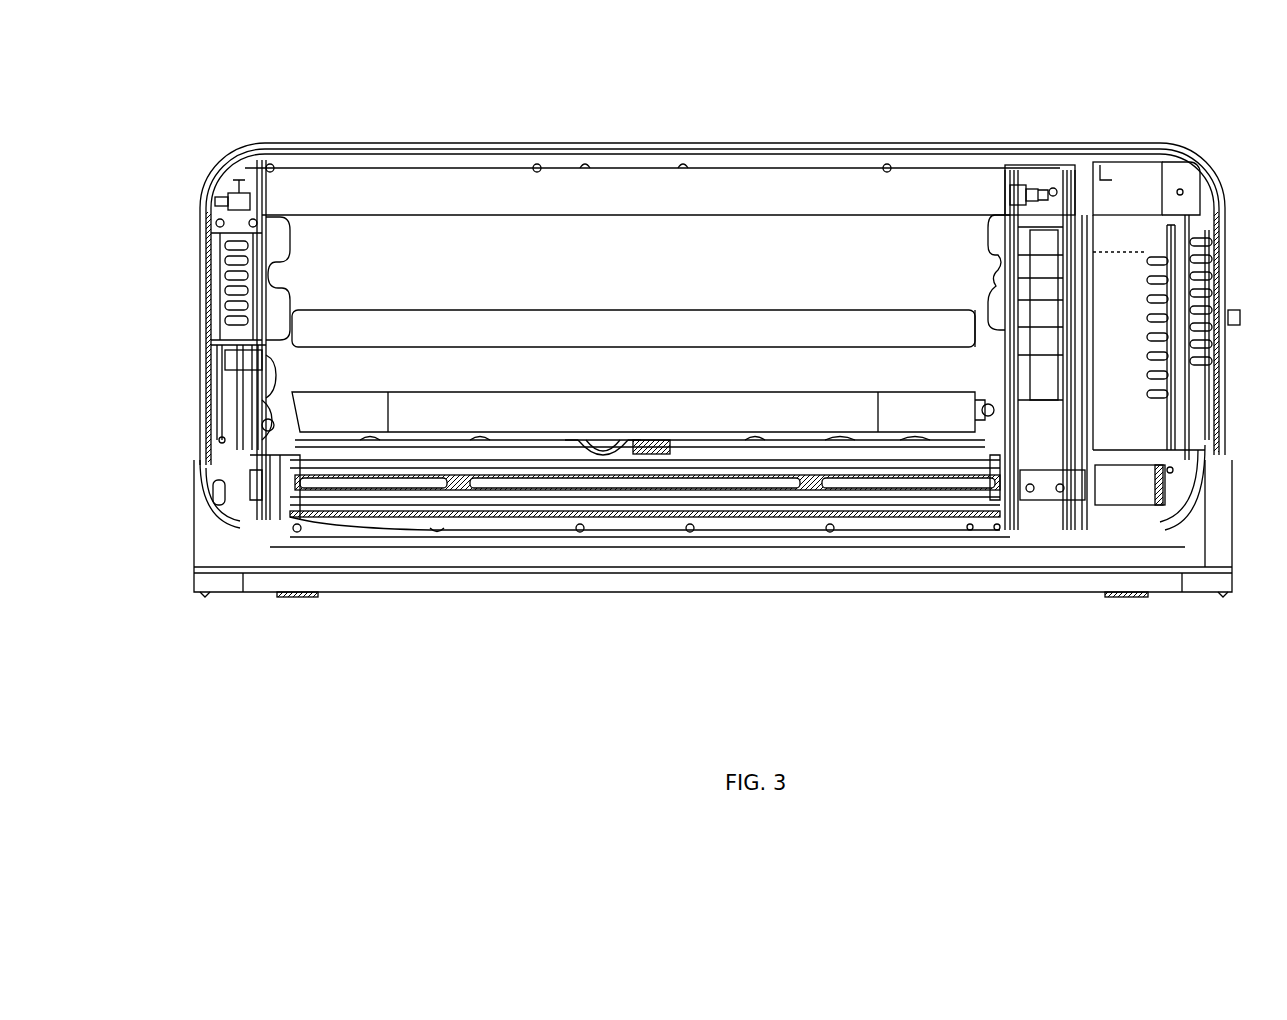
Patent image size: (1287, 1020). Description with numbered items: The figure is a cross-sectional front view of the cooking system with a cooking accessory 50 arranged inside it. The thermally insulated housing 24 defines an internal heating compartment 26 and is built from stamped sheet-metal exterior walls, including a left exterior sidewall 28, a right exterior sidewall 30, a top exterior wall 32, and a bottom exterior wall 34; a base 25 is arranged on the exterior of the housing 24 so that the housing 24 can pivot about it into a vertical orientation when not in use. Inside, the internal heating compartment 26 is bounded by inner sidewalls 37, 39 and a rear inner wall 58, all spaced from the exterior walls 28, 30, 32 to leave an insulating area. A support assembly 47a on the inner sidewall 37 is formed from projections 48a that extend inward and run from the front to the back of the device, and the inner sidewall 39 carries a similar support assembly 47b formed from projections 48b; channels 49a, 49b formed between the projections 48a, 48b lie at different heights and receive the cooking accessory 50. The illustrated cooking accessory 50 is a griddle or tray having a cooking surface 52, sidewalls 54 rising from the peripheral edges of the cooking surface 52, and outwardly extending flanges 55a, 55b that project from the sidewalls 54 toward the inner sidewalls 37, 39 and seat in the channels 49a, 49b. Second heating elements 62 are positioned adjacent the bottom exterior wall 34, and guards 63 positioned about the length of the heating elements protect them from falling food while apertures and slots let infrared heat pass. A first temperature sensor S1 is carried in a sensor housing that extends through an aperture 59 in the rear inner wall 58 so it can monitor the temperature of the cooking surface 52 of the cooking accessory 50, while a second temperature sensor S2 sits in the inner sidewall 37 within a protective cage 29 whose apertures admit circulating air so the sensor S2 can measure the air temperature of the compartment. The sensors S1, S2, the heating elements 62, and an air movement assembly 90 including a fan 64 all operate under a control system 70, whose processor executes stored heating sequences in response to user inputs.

The housing 24 is at (797, 130).
The base 25 is at (1222, 580).
The internal heating compartment 26 is at (683, 240).
The left exterior sidewall 28 is at (200, 428).
The protective cage 29 is at (207, 236).
The right exterior sidewall 30 is at (1205, 420).
The top exterior wall 32 is at (590, 165).
The bottom exterior wall 34 is at (817, 547).
The inner sidewall 37 is at (262, 165).
The inner sidewall 39 is at (1005, 188).
The support assembly 47a is at (282, 283).
The support assembly 47b is at (992, 275).
The projections 48a is at (272, 245).
The projections 48b is at (1000, 215).
The channels 49a is at (272, 362).
The channels 49b is at (985, 385).
The cooking accessory 50 is at (405, 450).
The cooking surface 52 is at (440, 432).
The sidewalls 54 is at (967, 407).
The outwardly extending flange 55a is at (283, 525).
The outwardly extending flange 55b is at (990, 457).
The rear inner wall 58 is at (535, 235).
The aperture 59 is at (630, 455).
The second heating element 62 is at (603, 475).
The guard 63 is at (808, 448).
The fan 64 is at (1060, 190).
The control system 70 is at (1212, 252).
The air movement assembly 90 is at (1088, 247).
The first temperature sensor S1 is at (635, 438).
The second temperature sensor S2 is at (225, 300).